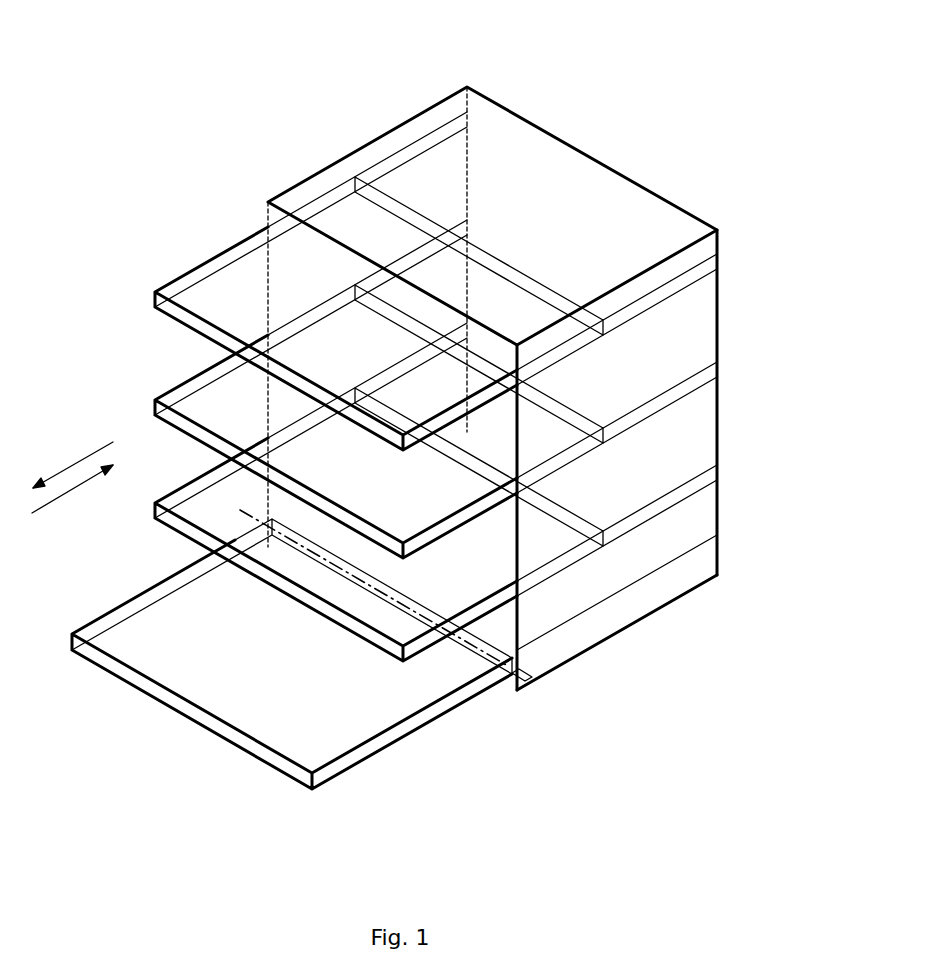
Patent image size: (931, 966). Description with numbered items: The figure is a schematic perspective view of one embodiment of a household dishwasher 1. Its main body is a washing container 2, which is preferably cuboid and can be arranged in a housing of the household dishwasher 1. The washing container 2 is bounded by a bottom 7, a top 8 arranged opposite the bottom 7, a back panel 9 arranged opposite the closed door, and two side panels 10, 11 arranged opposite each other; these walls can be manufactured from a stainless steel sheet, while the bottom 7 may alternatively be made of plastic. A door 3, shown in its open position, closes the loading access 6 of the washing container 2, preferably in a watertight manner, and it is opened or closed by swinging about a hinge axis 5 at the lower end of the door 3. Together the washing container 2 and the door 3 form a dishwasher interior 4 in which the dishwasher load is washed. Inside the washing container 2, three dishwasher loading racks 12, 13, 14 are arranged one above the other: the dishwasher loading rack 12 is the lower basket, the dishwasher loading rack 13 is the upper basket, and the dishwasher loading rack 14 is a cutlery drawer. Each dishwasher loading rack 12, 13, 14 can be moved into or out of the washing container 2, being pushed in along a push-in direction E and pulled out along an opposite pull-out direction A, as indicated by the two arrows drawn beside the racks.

The household dishwasher 1 is at (312, 88).
The washing container 2 is at (304, 183).
The door 3 is at (150, 614).
The dishwasher interior 4 is at (488, 444).
The hinge axis 5 is at (543, 683).
The loading access 6 is at (502, 617).
The bottom 7 is at (607, 586).
The top 8 is at (517, 133).
The back panel 9 is at (622, 190).
The side panel 10 is at (388, 163).
The side panel 11 is at (690, 343).
The dishwasher loading rack 12 is at (183, 509).
The dishwasher loading rack 13 is at (184, 408).
The dishwasher loading rack 14 is at (221, 278).